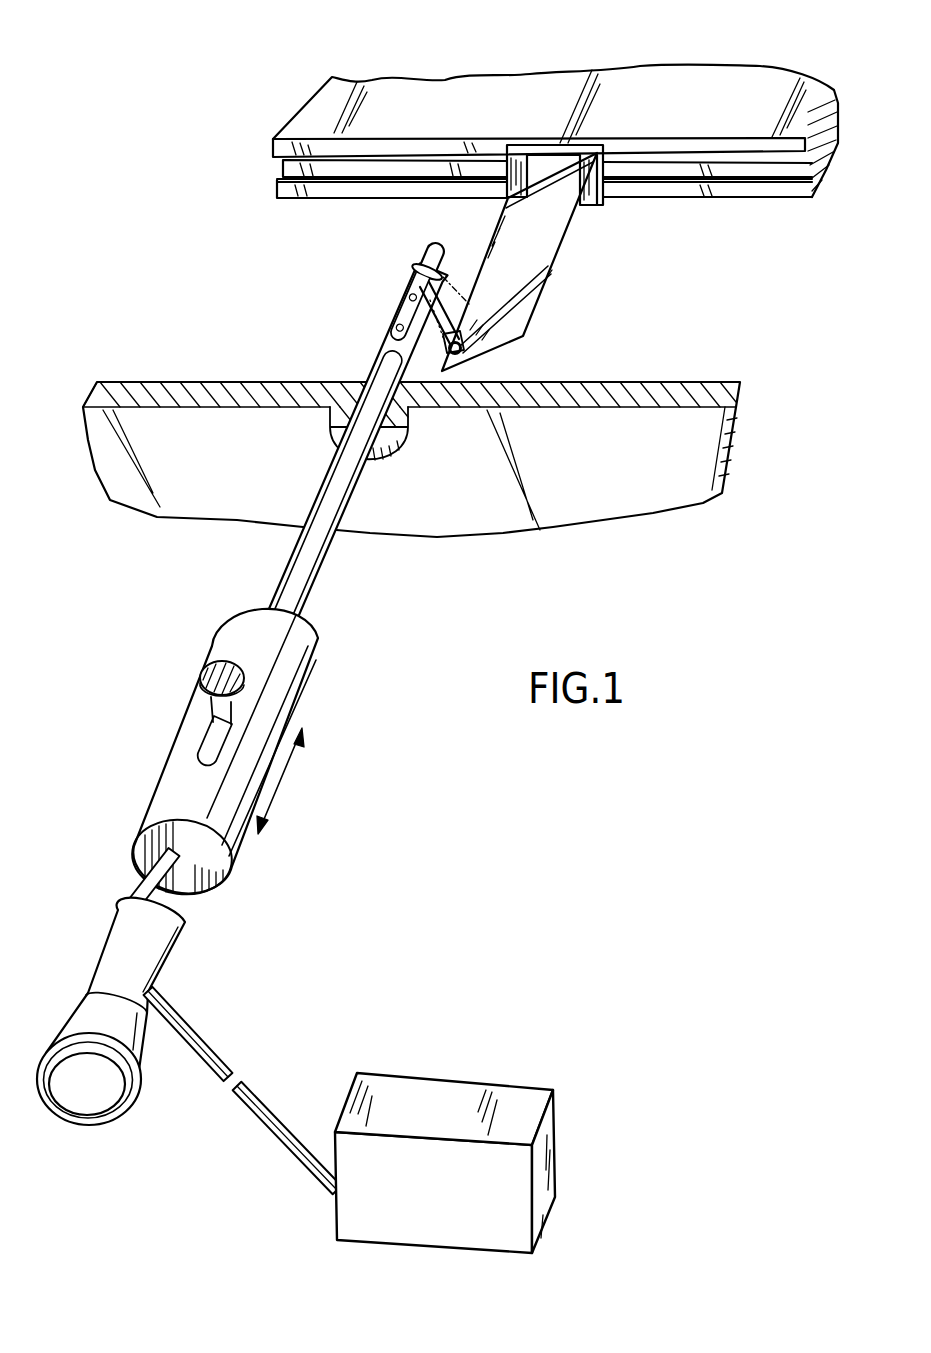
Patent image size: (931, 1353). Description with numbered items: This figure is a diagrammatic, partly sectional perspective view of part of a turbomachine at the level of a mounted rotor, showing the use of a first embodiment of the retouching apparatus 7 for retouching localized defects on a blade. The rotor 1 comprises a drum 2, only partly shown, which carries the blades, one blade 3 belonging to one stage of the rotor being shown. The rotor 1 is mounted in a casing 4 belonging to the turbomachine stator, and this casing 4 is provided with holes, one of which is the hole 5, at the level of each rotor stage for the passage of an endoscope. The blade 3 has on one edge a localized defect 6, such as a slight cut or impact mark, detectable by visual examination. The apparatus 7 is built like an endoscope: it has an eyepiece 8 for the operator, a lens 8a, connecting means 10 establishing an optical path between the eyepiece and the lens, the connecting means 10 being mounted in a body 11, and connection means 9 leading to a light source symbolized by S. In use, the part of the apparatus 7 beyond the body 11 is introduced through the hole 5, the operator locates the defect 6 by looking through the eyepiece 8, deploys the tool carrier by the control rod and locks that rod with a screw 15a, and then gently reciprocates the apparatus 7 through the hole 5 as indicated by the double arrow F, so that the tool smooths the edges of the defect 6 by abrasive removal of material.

The rotor 1 is at (645, 300).
The drum 2 is at (733, 192).
The blade 3 is at (521, 297).
The casing 4 is at (700, 476).
The hole 5 is at (350, 383).
The localized defect 6 is at (398, 331).
The retouching apparatus 7 is at (240, 755).
The eyepiece 8 is at (104, 1100).
The lens 8a is at (441, 262).
The connection means 9 is at (205, 1032).
The connecting means 10 is at (318, 553).
The body 11 is at (318, 655).
The screw 15a is at (210, 682).
The double arrow F is at (283, 784).
The light source S is at (446, 1208).